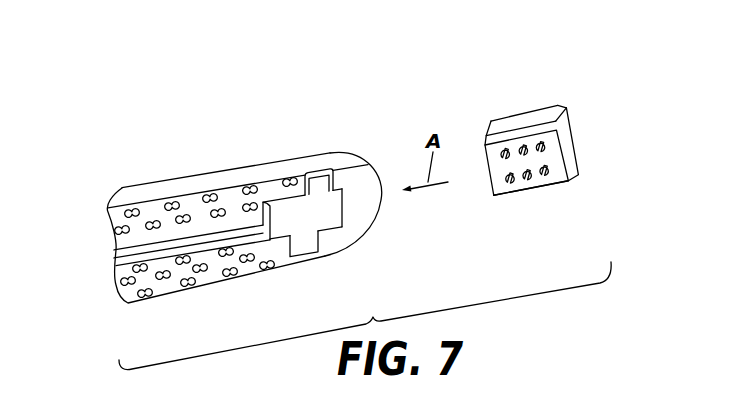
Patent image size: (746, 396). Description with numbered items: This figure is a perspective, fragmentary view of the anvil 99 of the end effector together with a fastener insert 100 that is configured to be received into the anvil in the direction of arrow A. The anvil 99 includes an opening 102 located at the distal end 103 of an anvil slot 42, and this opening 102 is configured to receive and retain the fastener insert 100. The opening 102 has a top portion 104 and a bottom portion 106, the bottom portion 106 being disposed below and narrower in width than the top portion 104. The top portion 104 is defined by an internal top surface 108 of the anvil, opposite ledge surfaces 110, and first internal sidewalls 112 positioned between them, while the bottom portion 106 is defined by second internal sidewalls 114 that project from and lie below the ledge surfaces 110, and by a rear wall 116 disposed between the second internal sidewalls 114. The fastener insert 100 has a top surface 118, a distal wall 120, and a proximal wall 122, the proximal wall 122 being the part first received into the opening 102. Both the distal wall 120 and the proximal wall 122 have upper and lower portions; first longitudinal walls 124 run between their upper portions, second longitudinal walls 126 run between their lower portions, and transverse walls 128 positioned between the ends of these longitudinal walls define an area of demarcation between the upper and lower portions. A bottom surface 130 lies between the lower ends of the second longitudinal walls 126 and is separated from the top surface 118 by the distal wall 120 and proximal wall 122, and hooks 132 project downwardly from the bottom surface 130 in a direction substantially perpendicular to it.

The anvil 99 is at (166, 156).
The anvil slot 42 is at (200, 229).
The distal end 103 is at (346, 134).
The ledge surfaces 110 is at (313, 166).
The internal top surface 108 is at (332, 181).
The opening 102 is at (340, 203).
The top portion 104 is at (330, 210).
The bottom portion 106 is at (308, 221).
The first internal sidewalls 112 is at (340, 233).
The second internal sidewalls 114 is at (291, 246).
The rear wall 116 is at (268, 240).
The fastener insert 100 is at (548, 121).
The top surface 118 is at (571, 133).
The distal wall 120 is at (569, 152).
The proximal wall 122 is at (484, 147).
The first longitudinal walls 124 is at (552, 104).
The second longitudinal walls 126 is at (496, 138).
The transverse walls 128 is at (530, 127).
The bottom surface 130 is at (571, 181).
The hooks 132 is at (547, 176).